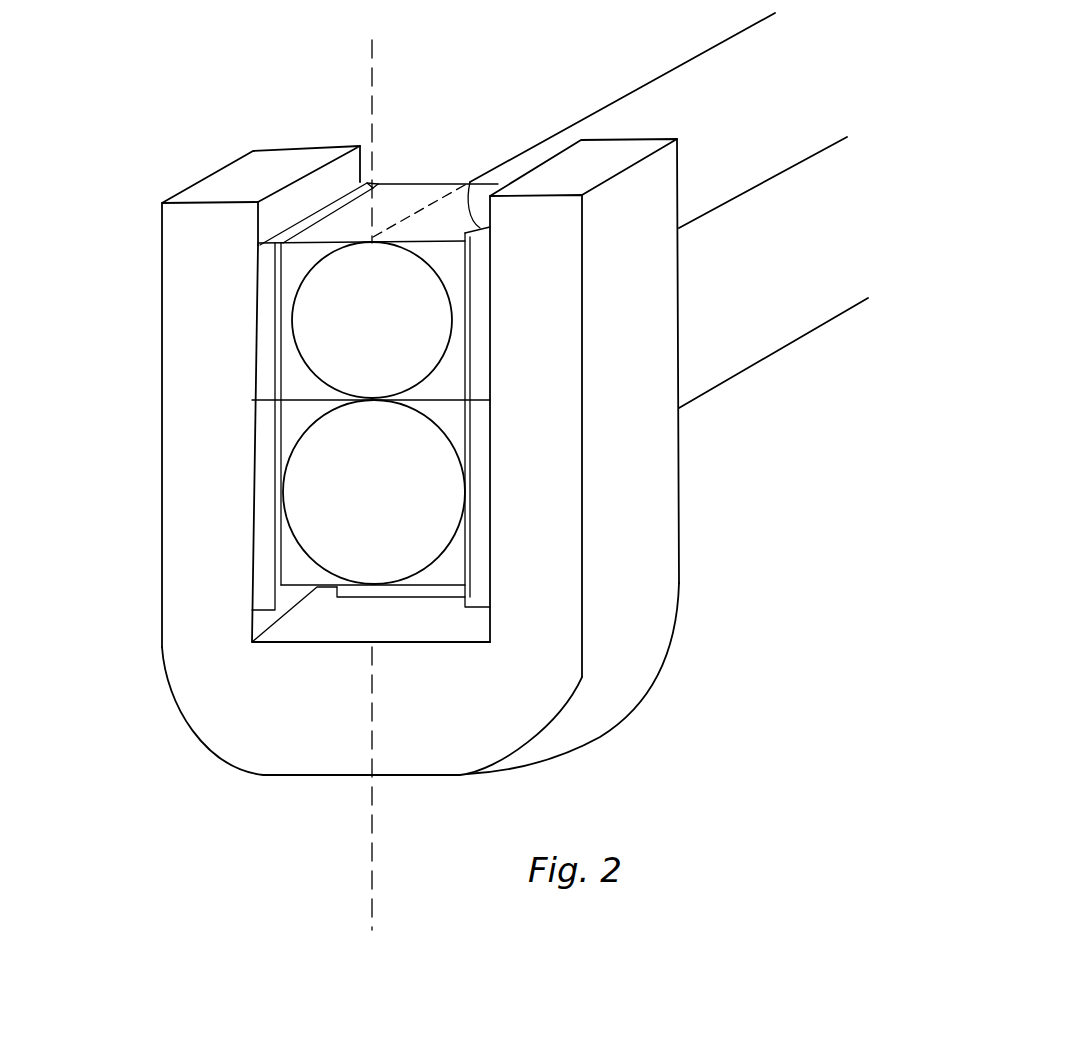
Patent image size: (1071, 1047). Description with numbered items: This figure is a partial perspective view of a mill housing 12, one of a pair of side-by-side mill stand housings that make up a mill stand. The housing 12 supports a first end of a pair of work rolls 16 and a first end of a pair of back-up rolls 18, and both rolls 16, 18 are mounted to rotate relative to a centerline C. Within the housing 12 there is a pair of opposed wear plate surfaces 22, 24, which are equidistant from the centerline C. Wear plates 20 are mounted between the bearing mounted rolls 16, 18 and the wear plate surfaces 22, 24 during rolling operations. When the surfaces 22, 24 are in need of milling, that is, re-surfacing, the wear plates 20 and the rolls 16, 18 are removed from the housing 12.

The mill stand housing 12 is at (207, 253).
The work rolls 16 is at (372, 320).
The back-up rolls 18 is at (374, 492).
The wear plates 20 is at (373, 181).
The wear plate surface 22 is at (253, 345).
The wear plate surface 24 is at (492, 310).
The centerline C is at (373, 47).